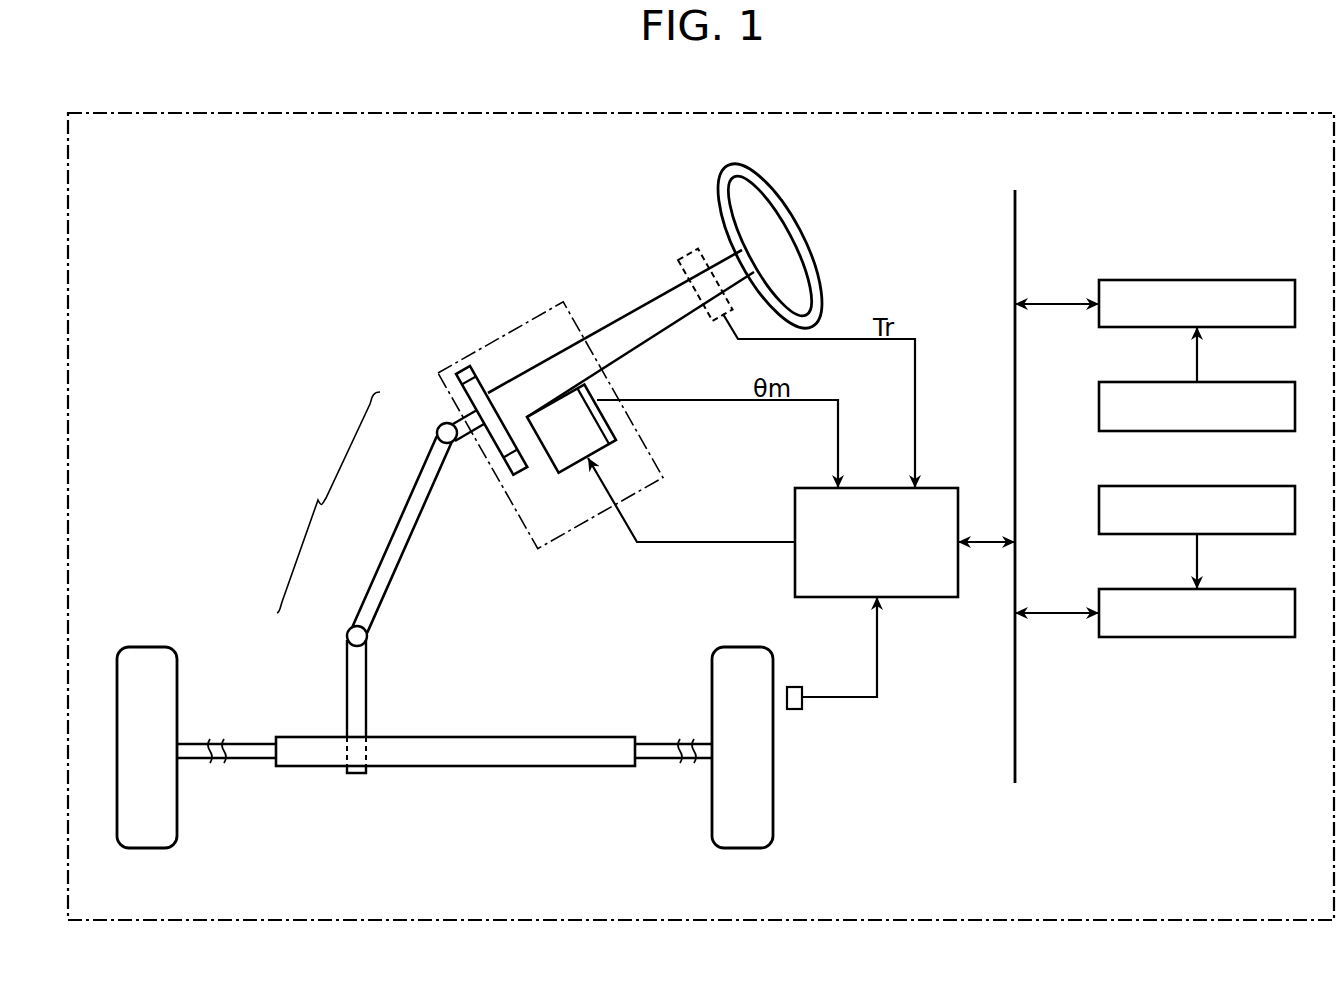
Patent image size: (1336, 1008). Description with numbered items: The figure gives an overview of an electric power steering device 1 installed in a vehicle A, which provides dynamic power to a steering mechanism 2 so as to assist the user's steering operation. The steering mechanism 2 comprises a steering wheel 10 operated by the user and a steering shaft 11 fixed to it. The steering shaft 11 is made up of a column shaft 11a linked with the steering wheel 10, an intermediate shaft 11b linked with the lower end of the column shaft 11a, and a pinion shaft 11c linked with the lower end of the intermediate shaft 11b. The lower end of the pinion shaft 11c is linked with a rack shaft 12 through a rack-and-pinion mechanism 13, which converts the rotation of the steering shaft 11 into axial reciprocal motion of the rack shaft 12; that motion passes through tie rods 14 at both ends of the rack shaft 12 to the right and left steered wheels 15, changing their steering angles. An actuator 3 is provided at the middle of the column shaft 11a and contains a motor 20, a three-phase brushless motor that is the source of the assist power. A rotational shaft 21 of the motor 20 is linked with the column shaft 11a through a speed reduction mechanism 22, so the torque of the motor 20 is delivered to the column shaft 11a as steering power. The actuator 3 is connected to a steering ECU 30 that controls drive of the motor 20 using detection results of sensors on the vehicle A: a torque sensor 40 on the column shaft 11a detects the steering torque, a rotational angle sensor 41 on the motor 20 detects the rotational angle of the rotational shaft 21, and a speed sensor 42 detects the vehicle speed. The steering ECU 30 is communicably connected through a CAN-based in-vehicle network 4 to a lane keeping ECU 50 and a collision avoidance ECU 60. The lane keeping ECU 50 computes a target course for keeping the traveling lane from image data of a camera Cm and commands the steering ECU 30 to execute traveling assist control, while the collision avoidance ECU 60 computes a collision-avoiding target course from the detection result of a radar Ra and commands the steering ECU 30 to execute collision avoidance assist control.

The electric power steering device 1 is at (228, 181).
The steering mechanism 2 is at (243, 407).
The actuator 3 is at (498, 338).
The in-vehicle network 4 is at (1014, 746).
The steering wheel 10 is at (793, 213).
The steering shaft 11 is at (328, 502).
The column shaft 11a is at (440, 426).
The intermediate shaft 11b is at (405, 498).
The pinion shaft 11c is at (346, 650).
The rack shaft 12 is at (450, 766).
The rack-and-pinion mechanism 13 is at (328, 720).
The tie rod 14 is at (245, 762).
The steered wheel 15 is at (147, 848).
The motor 20 is at (547, 473).
The rotational shaft 21 is at (496, 480).
The speed reduction mechanism 22 is at (496, 468).
The steering ECU 30 is at (796, 488).
The torque sensor 40 is at (692, 247).
The rotational angle sensor 41 is at (597, 388).
The speed sensor 42 is at (795, 712).
The lane keeping ECU 50 is at (1130, 280).
The collision avoidance ECU 60 is at (1133, 637).
The vehicle A is at (1210, 113).
The camera Cm is at (1099, 407).
The radar Ra is at (1099, 508).